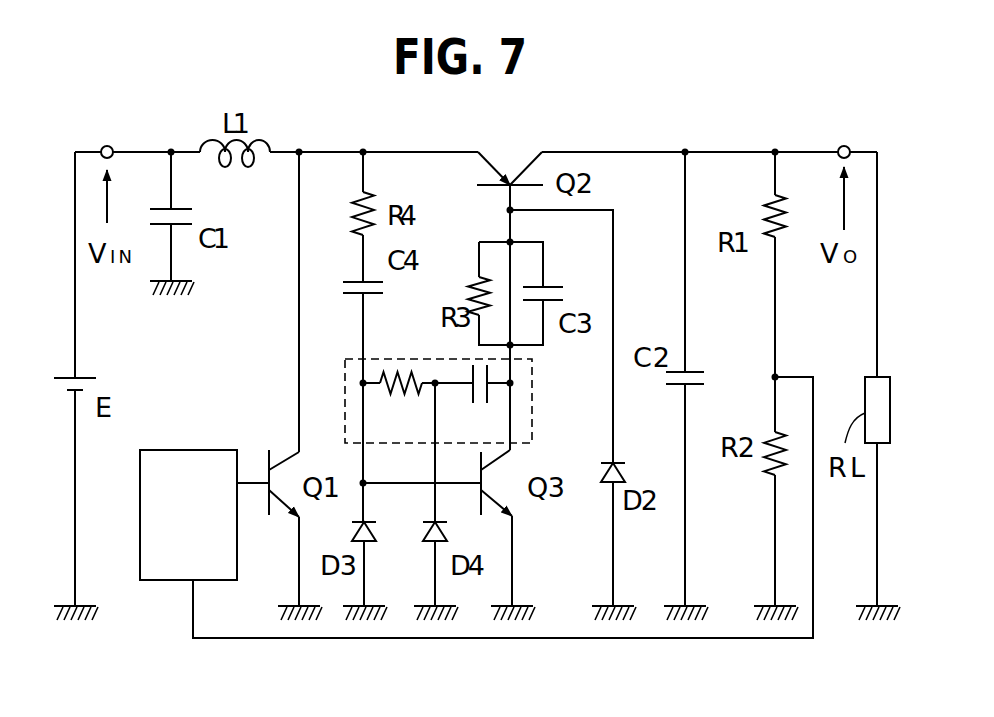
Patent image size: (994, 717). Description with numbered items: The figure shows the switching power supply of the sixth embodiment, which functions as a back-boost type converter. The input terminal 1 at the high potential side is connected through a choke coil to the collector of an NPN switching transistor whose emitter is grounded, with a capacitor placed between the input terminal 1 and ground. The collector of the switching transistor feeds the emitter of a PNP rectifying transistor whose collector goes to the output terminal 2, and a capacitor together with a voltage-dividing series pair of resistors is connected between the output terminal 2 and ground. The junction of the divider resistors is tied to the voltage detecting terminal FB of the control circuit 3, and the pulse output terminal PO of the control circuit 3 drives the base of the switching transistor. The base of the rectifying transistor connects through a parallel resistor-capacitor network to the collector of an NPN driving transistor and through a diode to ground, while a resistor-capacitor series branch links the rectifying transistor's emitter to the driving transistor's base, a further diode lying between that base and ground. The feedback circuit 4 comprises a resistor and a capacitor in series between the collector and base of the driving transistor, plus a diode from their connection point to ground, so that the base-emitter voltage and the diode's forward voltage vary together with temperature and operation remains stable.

The input terminal 1 is at (109, 146).
The output terminal 2 is at (843, 146).
The control circuit 3 is at (214, 449).
The feedback circuit 4 is at (342, 379).